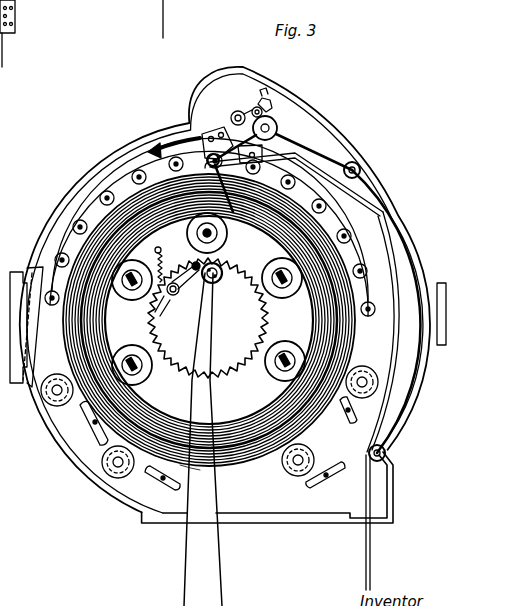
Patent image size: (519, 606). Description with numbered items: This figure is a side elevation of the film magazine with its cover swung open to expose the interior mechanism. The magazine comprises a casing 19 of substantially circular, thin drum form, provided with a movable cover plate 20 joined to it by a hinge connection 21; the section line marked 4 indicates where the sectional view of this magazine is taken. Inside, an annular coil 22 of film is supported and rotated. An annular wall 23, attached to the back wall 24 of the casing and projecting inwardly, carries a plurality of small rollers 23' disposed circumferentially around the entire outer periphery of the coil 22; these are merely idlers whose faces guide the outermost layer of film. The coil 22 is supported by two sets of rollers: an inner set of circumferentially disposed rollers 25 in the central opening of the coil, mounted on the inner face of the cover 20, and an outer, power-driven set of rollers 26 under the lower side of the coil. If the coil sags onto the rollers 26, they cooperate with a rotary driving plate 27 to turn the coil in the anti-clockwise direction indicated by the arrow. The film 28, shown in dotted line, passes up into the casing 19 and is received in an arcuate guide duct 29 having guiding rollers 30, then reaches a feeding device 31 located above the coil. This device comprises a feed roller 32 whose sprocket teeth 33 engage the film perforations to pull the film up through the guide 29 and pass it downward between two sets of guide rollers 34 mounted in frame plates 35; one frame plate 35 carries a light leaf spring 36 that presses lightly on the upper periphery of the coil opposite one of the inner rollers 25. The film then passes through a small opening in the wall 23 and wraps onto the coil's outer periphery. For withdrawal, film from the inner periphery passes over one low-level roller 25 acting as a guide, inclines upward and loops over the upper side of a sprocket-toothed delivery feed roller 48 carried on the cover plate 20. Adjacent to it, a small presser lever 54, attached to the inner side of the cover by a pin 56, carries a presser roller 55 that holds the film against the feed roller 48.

The section line 4 is at (7, 52).
The casing 19 is at (147, 132).
The cover plate 20 is at (29, 386).
The hinge connection 21 is at (15, 267).
The coil 22 is at (392, 194).
The annular wall 23 is at (295, 166).
The small rollers 23' is at (210, 314).
The back wall 24 is at (118, 166).
The rollers 25 is at (136, 269).
The rollers 26 is at (102, 466).
The rotary driving plate 27 is at (172, 418).
The film 28 is at (220, 555).
The arcuate guide duct 29 is at (403, 228).
The guiding rollers 30 is at (361, 165).
The feeding device 31 is at (277, 110).
The feed roller 32 is at (279, 121).
The sprocket teeth 33 is at (290, 180).
The guide rollers 34 is at (240, 110).
The frame plates 35 is at (220, 130).
The light leaf spring 36 is at (228, 223).
The delivery feed roller 48 is at (219, 283).
The presser lever 54 is at (193, 266).
The presser roller 55 is at (194, 284).
The pin 56 is at (178, 302).